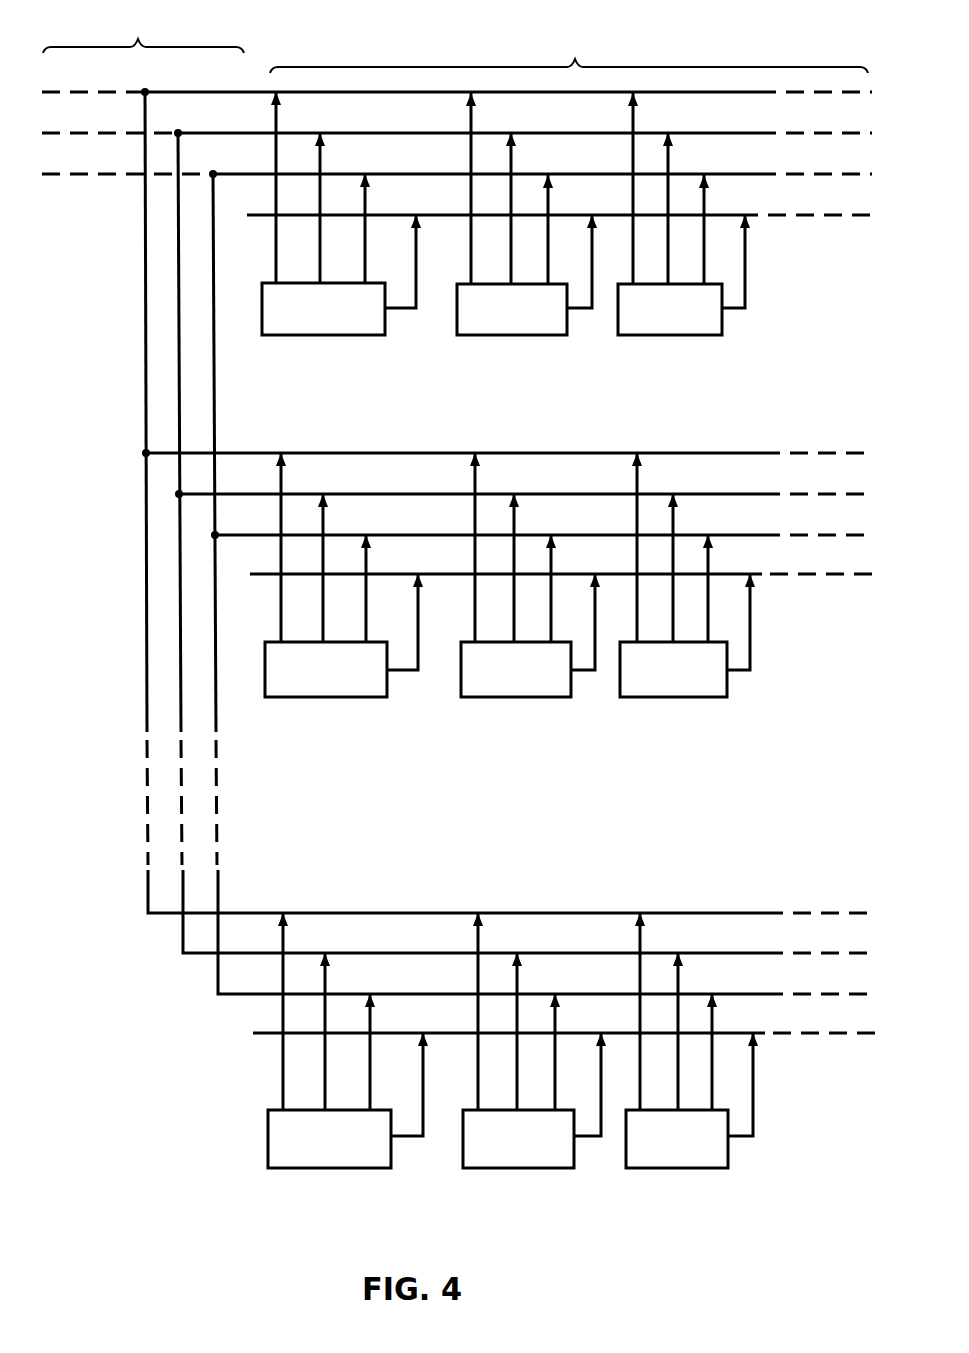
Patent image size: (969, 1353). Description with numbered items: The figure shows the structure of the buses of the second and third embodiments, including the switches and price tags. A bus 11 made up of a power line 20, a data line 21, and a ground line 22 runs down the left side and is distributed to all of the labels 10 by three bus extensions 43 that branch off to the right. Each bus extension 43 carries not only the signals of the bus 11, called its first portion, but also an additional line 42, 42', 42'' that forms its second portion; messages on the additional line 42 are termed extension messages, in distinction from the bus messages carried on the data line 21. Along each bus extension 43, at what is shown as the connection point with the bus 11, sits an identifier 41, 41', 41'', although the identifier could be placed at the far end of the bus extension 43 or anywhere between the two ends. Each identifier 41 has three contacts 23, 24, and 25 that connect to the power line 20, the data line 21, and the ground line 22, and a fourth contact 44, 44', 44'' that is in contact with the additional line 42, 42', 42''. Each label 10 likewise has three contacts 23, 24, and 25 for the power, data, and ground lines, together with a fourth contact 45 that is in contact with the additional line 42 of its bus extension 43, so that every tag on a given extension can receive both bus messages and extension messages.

The label 10 is at (513, 337).
The bus 11 is at (143, 29).
The power line 20 is at (208, 92).
The data line 21 is at (233, 133).
The ground line 22 is at (257, 173).
The first contact 23 is at (275, 258).
The second contact 24 is at (318, 243).
The third contact 25 is at (366, 265).
The identifier 41 is at (323, 334).
The identifier 41' is at (326, 699).
The identifier 41'' is at (329, 1172).
The additional line 42 is at (559, 246).
The additional line 42' is at (561, 607).
The additional line 42'' is at (564, 1068).
The bus extension 43 is at (569, 49).
The fourth contact 44 is at (406, 292).
The fourth contact 44' is at (415, 652).
The fourth contact 44'' is at (418, 1119).
The fourth contact 45 is at (580, 312).